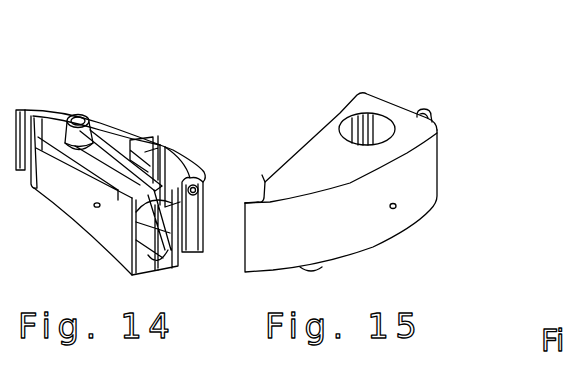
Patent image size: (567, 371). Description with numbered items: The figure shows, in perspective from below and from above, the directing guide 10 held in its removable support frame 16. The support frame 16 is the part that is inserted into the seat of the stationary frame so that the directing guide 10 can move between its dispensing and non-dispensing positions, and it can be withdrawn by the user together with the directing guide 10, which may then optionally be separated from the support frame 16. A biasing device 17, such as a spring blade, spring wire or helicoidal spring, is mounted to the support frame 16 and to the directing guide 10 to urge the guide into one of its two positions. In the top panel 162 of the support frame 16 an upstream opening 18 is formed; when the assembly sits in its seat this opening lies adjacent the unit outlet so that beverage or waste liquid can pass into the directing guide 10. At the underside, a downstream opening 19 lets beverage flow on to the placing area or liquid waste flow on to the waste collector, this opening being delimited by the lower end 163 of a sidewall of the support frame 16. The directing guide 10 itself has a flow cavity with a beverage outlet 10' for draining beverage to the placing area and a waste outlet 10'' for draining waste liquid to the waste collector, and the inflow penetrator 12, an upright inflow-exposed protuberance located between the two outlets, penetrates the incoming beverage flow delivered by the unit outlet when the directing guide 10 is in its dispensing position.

In FIG. 14, the directing guide 10 is at (118, 99).
In FIG. 14, the beverage outlet 10' is at (63, 100).
In FIG. 14, the waste outlet 10'' is at (179, 247).
In FIG. 15, the inflow penetrator 12 is at (368, 132).
In FIG. 15, the support frame 16 is at (358, 223).
In FIG. 15, the top panel 162 is at (400, 144).
In FIG. 14, the lower end of sidewall 163 is at (177, 168).
In FIG. 14, the biasing device 17 is at (138, 162).
In FIG. 15, the upstream opening 18 is at (362, 126).
In FIG. 14, the downstream opening 19 is at (167, 152).